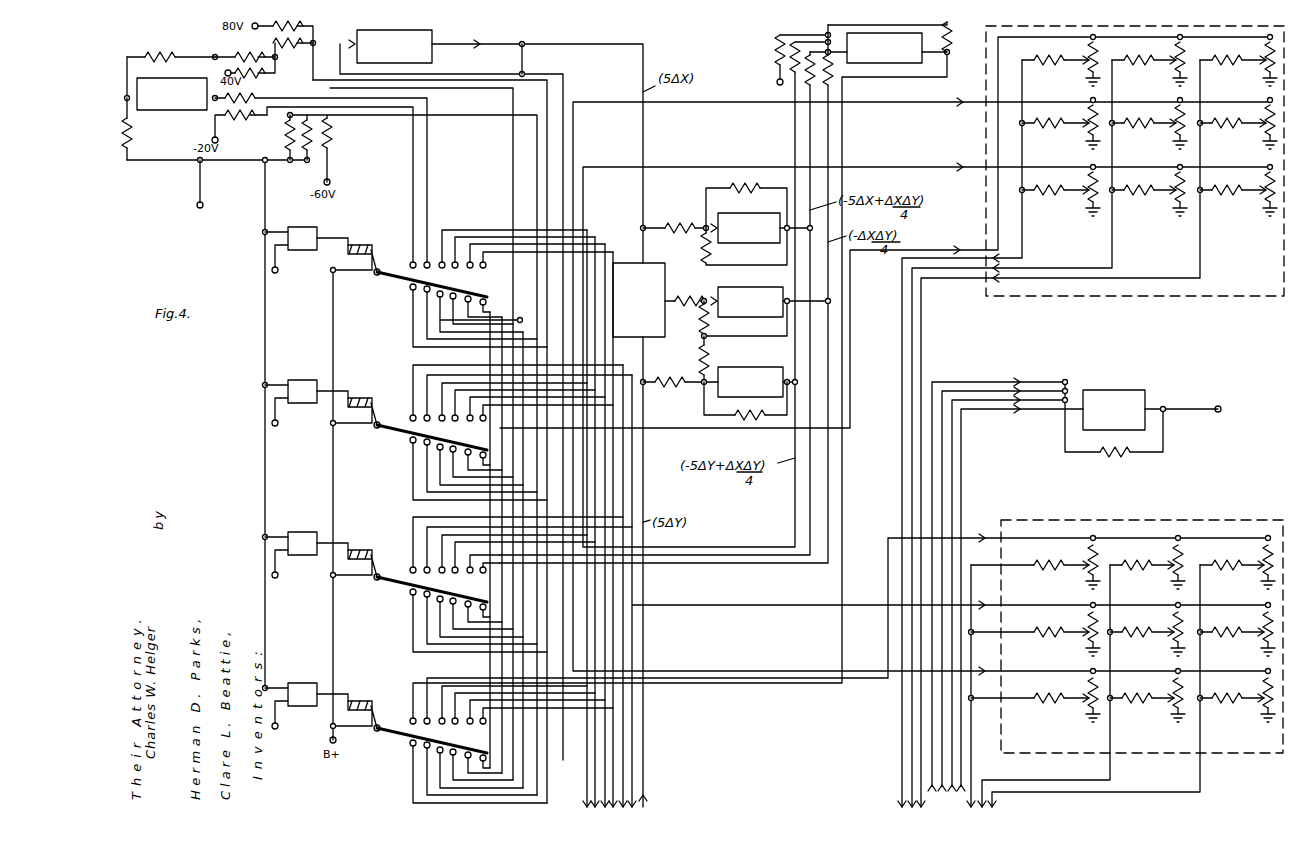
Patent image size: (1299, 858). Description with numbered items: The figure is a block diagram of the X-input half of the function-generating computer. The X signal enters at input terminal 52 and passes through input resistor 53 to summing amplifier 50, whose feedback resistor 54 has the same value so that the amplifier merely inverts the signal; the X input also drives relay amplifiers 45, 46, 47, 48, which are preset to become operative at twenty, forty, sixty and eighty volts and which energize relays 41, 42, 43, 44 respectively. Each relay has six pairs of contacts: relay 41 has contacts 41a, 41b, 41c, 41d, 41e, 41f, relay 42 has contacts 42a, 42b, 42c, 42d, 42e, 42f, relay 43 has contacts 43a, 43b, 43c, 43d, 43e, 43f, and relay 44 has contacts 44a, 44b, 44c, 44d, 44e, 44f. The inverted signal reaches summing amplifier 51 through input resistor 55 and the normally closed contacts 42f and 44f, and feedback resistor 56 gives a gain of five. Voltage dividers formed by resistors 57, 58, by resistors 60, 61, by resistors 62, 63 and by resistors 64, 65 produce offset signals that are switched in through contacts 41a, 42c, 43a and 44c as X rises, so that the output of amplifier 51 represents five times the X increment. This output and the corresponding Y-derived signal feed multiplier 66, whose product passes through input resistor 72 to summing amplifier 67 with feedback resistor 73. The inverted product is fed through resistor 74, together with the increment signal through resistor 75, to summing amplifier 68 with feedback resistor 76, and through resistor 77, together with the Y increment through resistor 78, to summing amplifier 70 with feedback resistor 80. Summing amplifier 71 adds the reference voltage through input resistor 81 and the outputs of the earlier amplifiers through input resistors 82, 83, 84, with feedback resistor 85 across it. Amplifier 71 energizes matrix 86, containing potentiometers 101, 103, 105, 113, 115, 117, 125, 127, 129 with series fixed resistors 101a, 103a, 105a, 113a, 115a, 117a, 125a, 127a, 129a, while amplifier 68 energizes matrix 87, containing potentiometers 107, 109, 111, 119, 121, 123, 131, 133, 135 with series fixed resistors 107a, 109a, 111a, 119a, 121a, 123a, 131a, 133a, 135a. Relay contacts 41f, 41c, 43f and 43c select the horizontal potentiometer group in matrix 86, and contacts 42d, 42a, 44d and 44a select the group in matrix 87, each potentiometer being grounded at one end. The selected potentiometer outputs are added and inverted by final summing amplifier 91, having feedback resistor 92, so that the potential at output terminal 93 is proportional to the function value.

The relay 41 is at (368, 242).
The contacts of relay 41 41a is at (413, 260).
The contacts of relay 41 41b is at (442, 260).
The contacts of relay 41 41c is at (483, 260).
The contacts of relay 41 41d is at (410, 288).
The contacts of relay 41 41e is at (438, 296).
The contacts of relay 41 41f is at (466, 302).
The relay 42 is at (366, 395).
The contacts of relay 42 42a is at (413, 413).
The contacts of relay 42 42b is at (442, 413).
The contacts of relay 42 42c is at (483, 413).
The contacts of relay 42 42d is at (410, 441).
The contacts of relay 42 42e is at (438, 449).
The contacts of relay 42 42f is at (466, 455).
The relay 43 is at (366, 547).
The contacts of relay 43 43a is at (413, 565).
The contacts of relay 43 43b is at (442, 565).
The contacts of relay 43 43c is at (483, 565).
The contacts of relay 43 43d is at (410, 593).
The contacts of relay 43 43e is at (438, 601).
The contacts of relay 43 43f is at (466, 607).
The relay 44 is at (366, 698).
The contacts of relay 44 44a is at (413, 716).
The contacts of relay 44 44b is at (442, 716).
The contacts of relay 44 44c is at (483, 716).
The contacts of relay 44 44d is at (410, 744).
The contacts of relay 44 44e is at (438, 752).
The contacts of relay 44 44f is at (466, 758).
The relay amplifier 45 is at (308, 251).
The relay amplifier 46 is at (305, 380).
The relay amplifier 47 is at (305, 532).
The relay amplifier 48 is at (305, 683).
The summing amplifier 50 is at (175, 110).
The summing amplifier 51 is at (432, 42).
The input terminal 52 is at (203, 205).
The input resistor 53 is at (132, 142).
The feedback resistor 54 is at (160, 53).
The input resistor 55 is at (250, 95).
The feedback resistor 56 is at (523, 72).
The resistor 57 is at (247, 120).
The resistor 58 is at (287, 133).
The resistor 60 is at (240, 55).
The resistor 61 is at (225, 71).
The resistor 62 is at (307, 152).
The resistor 63 is at (335, 140).
The resistor 64 is at (303, 22).
The resistor 65 is at (310, 45).
The multiplier 66 is at (632, 262).
The summing amplifier 67 is at (765, 282).
The summing amplifier 68 is at (752, 214).
The summing amplifier 70 is at (760, 367).
The summing amplifier 71 is at (949, 63).
The input resistor 72 is at (696, 289).
The feedback resistor 73 is at (701, 318).
The input resistor 74 is at (704, 245).
The input resistor 75 is at (693, 222).
The feedback resistor 76 is at (740, 190).
The input resistor 77 is at (710, 360).
The input resistor 78 is at (672, 388).
The feedback resistor 80 is at (752, 418).
The input resistor 81 is at (775, 50).
The input resistor 82 is at (790, 63).
The input resistor 83 is at (808, 88).
The input resistor 84 is at (832, 82).
The feedback resistor 85 is at (951, 43).
The matrix 86 is at (1205, 296).
The matrix 87 is at (1138, 520).
The final summing amplifier 91 is at (1118, 390).
The feedback resistor 92 is at (1116, 457).
The output terminal 93 is at (1190, 407).
The potentiometer 101 is at (1088, 180).
The fixed resistor 101a is at (1055, 201).
The potentiometer 103 is at (1175, 180).
The fixed resistor 103a is at (1143, 201).
The potentiometer 105 is at (1265, 180).
The fixed resistor 105a is at (1232, 201).
The potentiometer 107 is at (1088, 686).
The fixed resistor 107a is at (1029, 709).
The potentiometer 109 is at (1173, 686).
The fixed resistor 109a is at (1141, 709).
The potentiometer 111 is at (1263, 686).
The fixed resistor 111a is at (1231, 709).
The potentiometer 113 is at (1088, 113).
The fixed resistor 113a is at (1055, 134).
The potentiometer 115 is at (1175, 113).
The fixed resistor 115a is at (1143, 134).
The potentiometer 117 is at (1265, 113).
The fixed resistor 117a is at (1232, 134).
The potentiometer 119 is at (1088, 620).
The fixed resistor 119a is at (1029, 643).
The potentiometer 121 is at (1173, 620).
The fixed resistor 121a is at (1141, 643).
The potentiometer 123 is at (1263, 620).
The fixed resistor 123a is at (1231, 643).
The potentiometer 125 is at (1088, 50).
The fixed resistor 125a is at (1055, 71).
The potentiometer 127 is at (1175, 50).
The fixed resistor 127a is at (1144, 71).
The potentiometer 129 is at (1265, 50).
The fixed resistor 129a is at (1233, 71).
The potentiometer 131 is at (1088, 553).
The fixed resistor 131a is at (1030, 576).
The potentiometer 133 is at (1173, 553).
The fixed resistor 133a is at (1142, 576).
The potentiometer 135 is at (1263, 553).
The fixed resistor 135a is at (1232, 576).